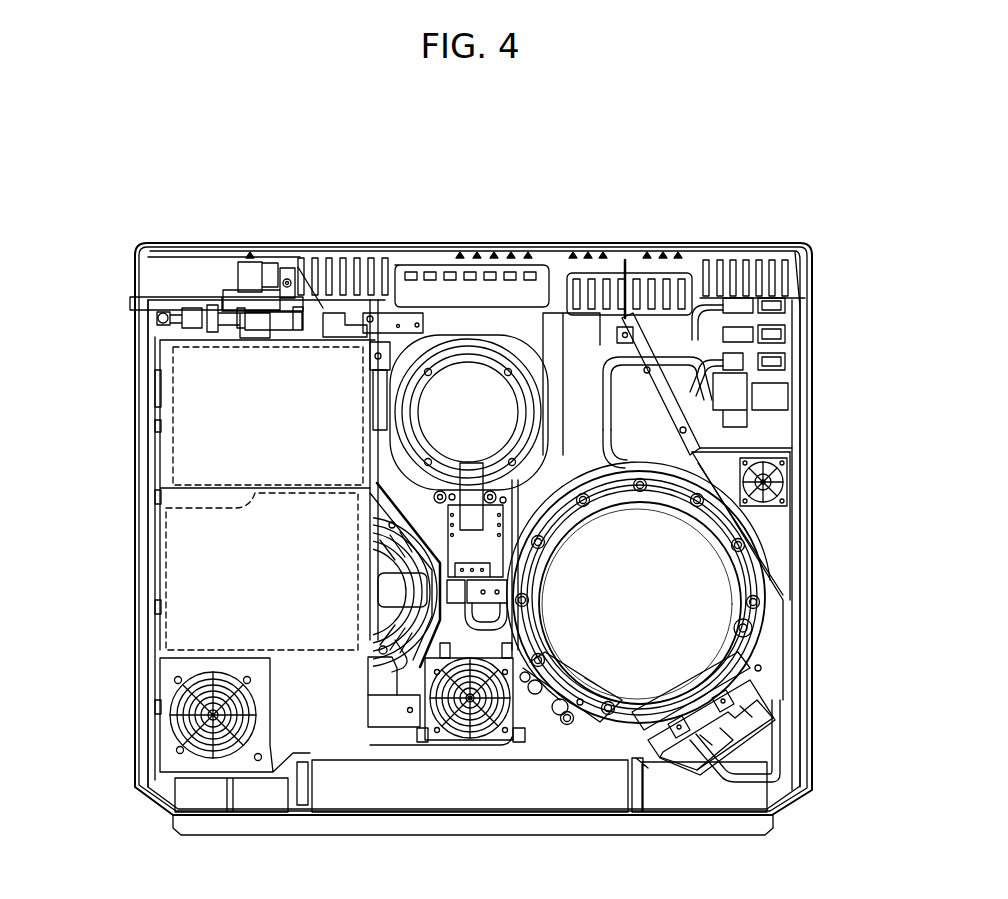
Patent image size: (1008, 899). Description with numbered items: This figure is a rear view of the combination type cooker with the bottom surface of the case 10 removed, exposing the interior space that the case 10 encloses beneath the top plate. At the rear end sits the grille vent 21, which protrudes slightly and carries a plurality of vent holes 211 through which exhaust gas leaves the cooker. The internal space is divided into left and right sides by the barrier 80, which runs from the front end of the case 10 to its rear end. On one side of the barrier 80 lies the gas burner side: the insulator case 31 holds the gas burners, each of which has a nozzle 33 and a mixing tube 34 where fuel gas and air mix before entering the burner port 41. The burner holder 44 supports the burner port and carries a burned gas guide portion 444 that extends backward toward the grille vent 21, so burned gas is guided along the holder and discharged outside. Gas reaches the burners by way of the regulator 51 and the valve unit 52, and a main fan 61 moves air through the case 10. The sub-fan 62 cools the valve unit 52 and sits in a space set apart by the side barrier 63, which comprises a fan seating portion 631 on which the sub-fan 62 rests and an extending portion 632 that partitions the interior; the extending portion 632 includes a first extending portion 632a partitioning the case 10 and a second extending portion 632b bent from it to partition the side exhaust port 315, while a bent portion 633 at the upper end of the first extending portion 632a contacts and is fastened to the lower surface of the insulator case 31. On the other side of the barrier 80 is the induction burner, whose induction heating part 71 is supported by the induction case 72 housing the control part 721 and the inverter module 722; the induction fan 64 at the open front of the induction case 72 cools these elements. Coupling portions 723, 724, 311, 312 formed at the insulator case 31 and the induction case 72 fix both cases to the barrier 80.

The case 10 is at (800, 736).
The grille vent 21 is at (730, 247).
The vent holes 211 is at (338, 298).
The insulator case 31 is at (778, 620).
The coupling portion 311 is at (380, 330).
The coupling portion 312 is at (493, 595).
The side exhaust port 315 is at (633, 283).
The nozzle 33 is at (477, 480).
The mixing tube 34 is at (417, 330).
The burner port 41 is at (678, 670).
The burner holder 44 is at (614, 722).
The burned gas guide portion 444 is at (582, 333).
The regulator 51 is at (252, 256).
The valve unit 52 is at (797, 379).
The main fan 61 is at (498, 747).
The sub-fan 62 is at (795, 488).
The side barrier 63 is at (788, 527).
The fan seating portion 631 is at (783, 553).
The extending portion 632 is at (715, 193).
The first extending portion 632a is at (660, 313).
The second extending portion 632b is at (640, 303).
The bent portion 633 is at (627, 340).
The induction fan 64 is at (197, 768).
The induction heating part 71 is at (385, 647).
The induction case 72 is at (152, 477).
The control part 721 is at (158, 410).
The inverter module 722 is at (155, 558).
The coupling portion 723 is at (395, 713).
The coupling portion 724 is at (365, 320).
The barrier 80 is at (443, 740).